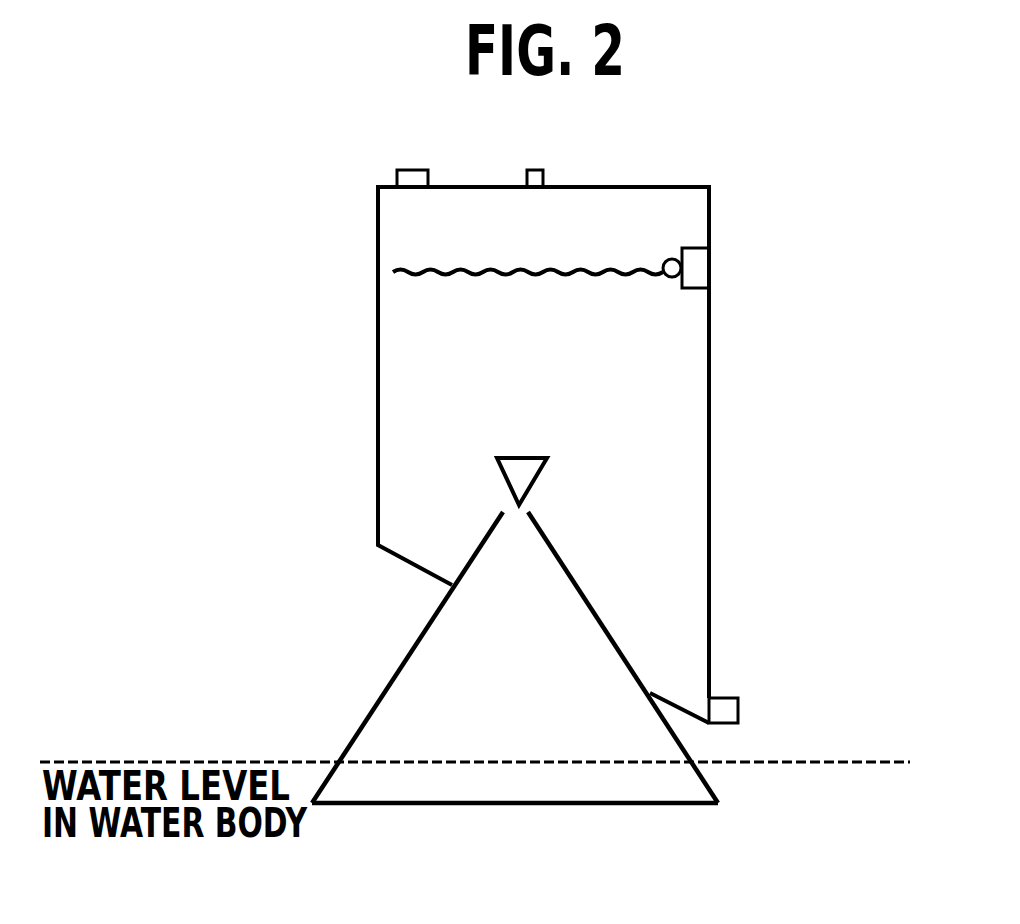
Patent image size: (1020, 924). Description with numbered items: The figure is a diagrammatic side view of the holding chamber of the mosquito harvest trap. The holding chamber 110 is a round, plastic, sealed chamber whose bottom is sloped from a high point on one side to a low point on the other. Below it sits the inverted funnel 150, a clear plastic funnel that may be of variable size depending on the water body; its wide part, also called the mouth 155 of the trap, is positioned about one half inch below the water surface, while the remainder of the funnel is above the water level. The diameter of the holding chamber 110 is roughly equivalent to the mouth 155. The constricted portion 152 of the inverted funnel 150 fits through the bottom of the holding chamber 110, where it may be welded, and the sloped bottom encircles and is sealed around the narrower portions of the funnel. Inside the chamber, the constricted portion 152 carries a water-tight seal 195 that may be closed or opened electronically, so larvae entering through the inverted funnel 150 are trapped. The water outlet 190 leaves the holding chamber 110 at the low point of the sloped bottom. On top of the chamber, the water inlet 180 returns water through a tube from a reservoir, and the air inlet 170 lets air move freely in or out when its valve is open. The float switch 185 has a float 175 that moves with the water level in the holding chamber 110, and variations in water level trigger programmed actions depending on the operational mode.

The holding chamber 110 is at (711, 413).
The inverted funnel 150 is at (504, 662).
The constricted portion 152 is at (550, 543).
The mouth 155 is at (570, 816).
The air inlet 170 is at (410, 170).
The float 175 is at (667, 279).
The water inlet 180 is at (534, 170).
The float switch 185 is at (722, 257).
The water outlet 190 is at (739, 712).
The water-tight seal 195 is at (501, 468).